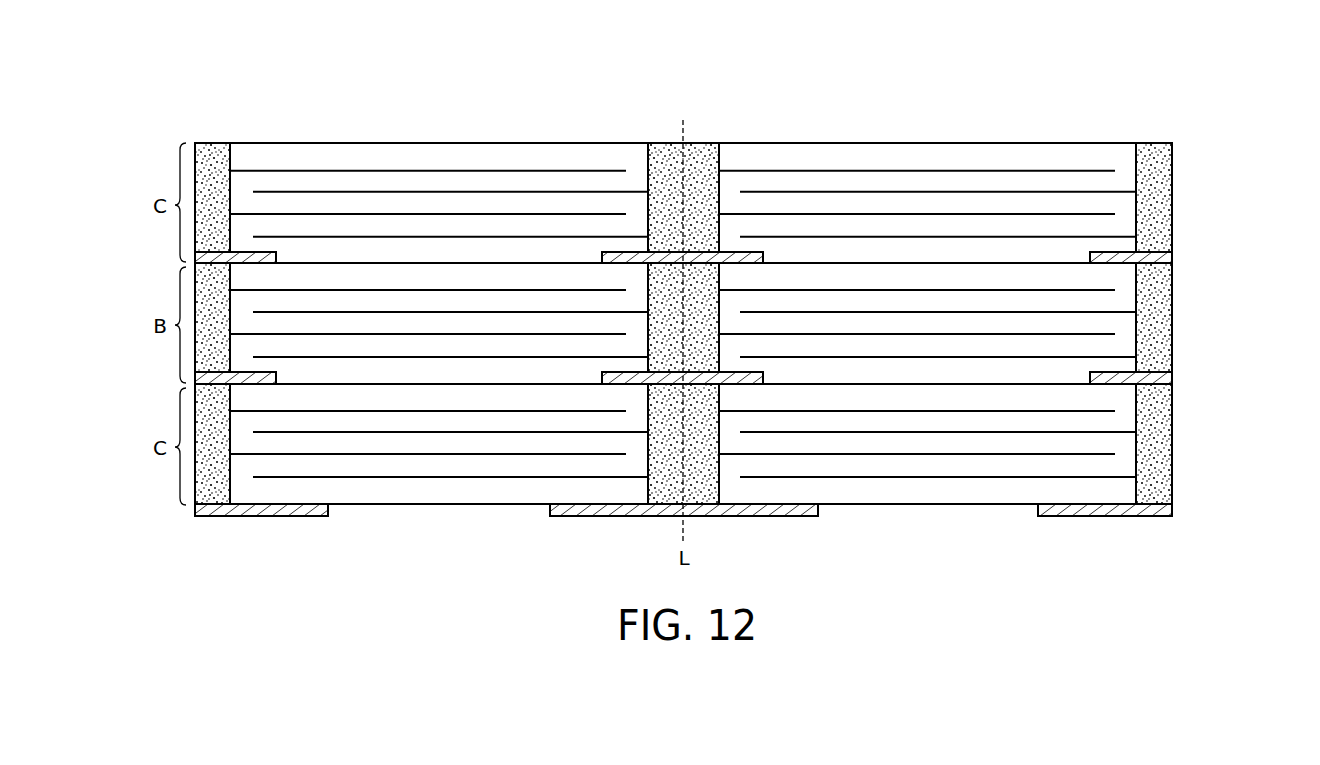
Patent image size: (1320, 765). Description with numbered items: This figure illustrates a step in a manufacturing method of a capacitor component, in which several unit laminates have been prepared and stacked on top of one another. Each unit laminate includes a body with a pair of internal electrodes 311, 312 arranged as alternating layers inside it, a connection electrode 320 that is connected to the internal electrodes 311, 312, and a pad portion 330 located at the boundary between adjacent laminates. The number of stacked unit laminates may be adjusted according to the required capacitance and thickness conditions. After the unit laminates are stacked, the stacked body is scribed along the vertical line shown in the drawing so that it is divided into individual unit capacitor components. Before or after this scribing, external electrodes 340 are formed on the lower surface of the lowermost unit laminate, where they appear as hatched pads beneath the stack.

The internal electrode 311 is at (283, 170).
The internal electrode 312 is at (381, 191).
The connection electrode 320 is at (1170, 197).
The pad portion 330 is at (1165, 257).
The external electrode 340 is at (266, 516).